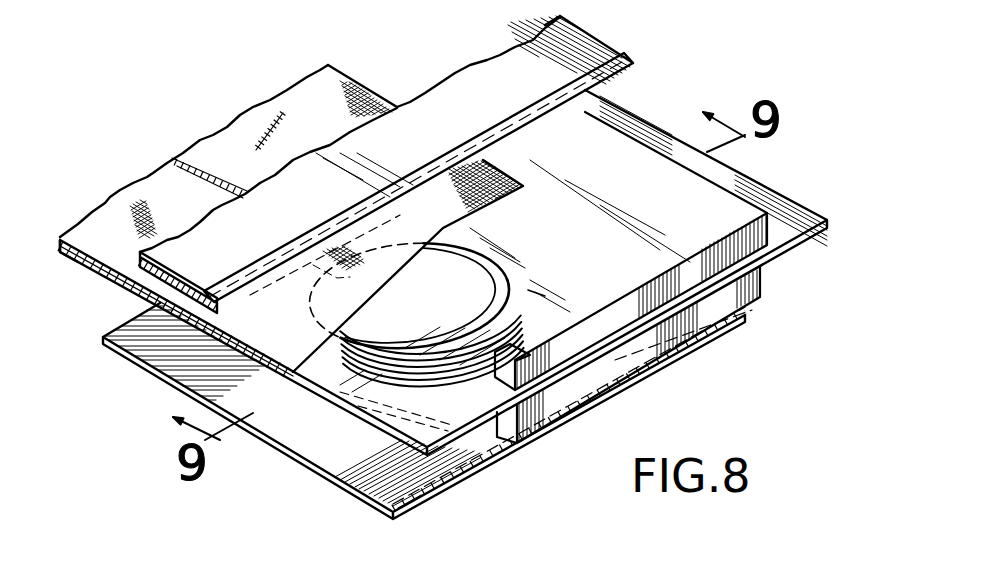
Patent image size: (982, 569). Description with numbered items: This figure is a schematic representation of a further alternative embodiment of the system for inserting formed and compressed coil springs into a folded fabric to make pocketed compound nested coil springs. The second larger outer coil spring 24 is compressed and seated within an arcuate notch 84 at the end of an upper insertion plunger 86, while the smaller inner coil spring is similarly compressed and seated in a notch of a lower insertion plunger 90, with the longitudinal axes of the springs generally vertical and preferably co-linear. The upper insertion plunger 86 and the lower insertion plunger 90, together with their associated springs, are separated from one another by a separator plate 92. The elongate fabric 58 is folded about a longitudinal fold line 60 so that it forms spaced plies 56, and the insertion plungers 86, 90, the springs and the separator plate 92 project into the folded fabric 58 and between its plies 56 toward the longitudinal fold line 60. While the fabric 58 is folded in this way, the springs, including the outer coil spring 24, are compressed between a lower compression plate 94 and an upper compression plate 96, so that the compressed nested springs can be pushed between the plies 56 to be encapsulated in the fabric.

The second outer coil spring 24 is at (522, 272).
The plies 56 is at (338, 88).
The fabric 58 is at (211, 131).
The longitudinal fold line 60 is at (62, 250).
The arcuate notch 84 is at (536, 312).
The upper insertion plunger 86 is at (644, 192).
The lower insertion plunger 90 is at (760, 266).
The separator plate 92 is at (782, 190).
The lower compression plate 94 is at (438, 507).
The upper compression plate 96 is at (582, 50).